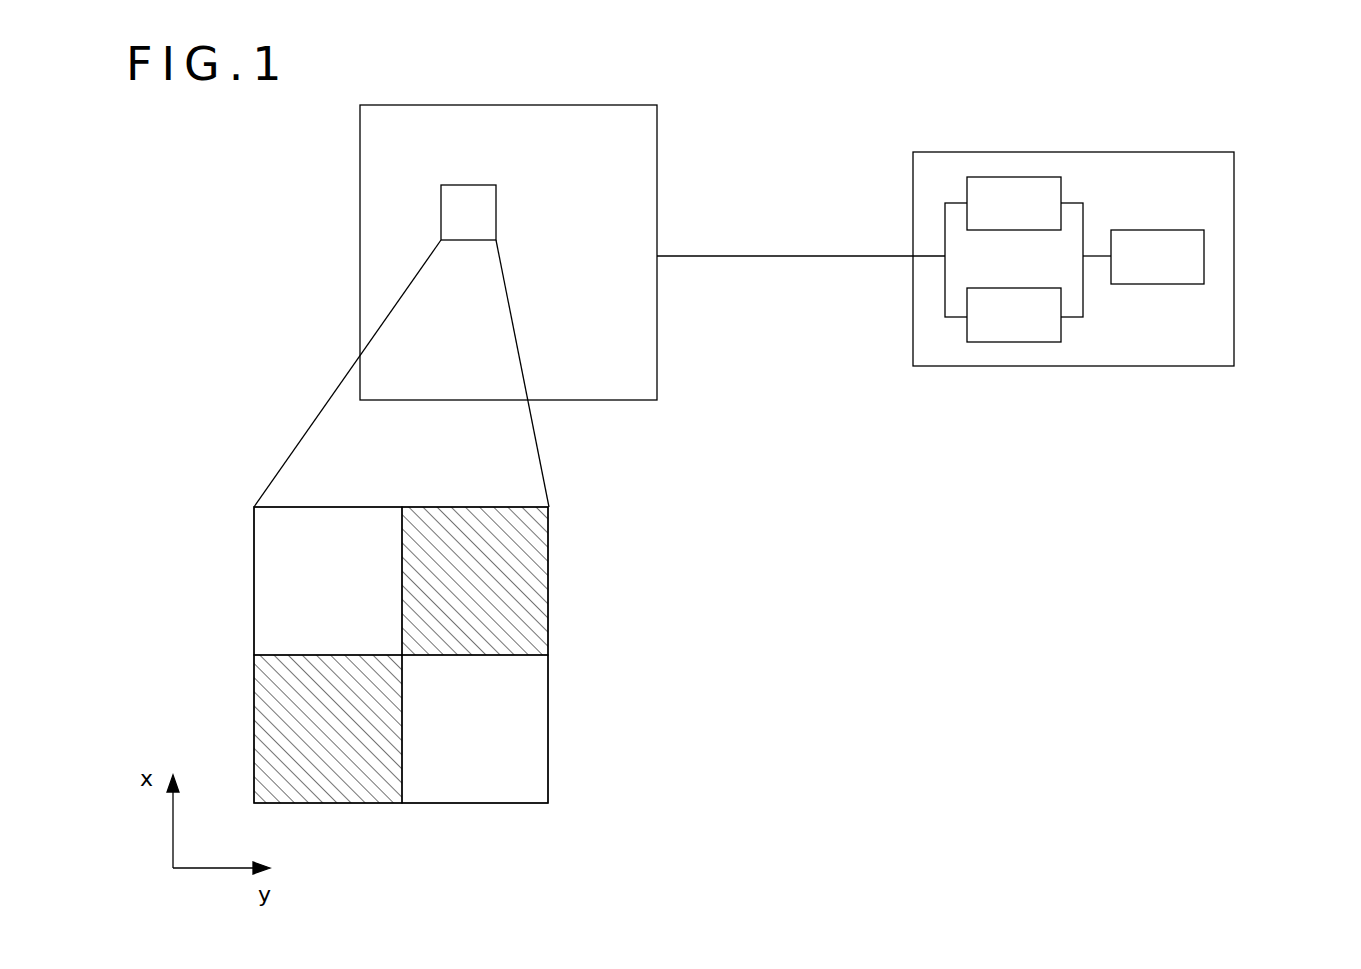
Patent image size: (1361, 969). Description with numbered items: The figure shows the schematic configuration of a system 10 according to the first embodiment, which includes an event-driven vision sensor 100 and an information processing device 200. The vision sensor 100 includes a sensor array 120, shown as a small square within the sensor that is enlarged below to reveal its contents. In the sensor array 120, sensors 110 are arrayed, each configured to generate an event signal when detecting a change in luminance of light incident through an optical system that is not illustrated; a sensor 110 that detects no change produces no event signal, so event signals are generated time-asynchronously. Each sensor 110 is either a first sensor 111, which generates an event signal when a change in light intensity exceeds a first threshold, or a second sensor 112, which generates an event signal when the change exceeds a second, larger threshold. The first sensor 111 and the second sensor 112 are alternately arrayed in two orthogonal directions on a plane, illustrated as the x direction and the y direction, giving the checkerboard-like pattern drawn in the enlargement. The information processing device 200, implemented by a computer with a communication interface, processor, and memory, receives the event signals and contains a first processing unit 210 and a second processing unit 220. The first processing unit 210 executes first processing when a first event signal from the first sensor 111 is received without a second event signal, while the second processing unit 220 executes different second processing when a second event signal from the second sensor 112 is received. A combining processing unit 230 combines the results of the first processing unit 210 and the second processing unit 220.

The system 10 is at (830, 135).
The event-driven vision sensor 100 is at (361, 197).
The sensor 110 is at (442, 655).
The first sensor 111 is at (353, 591).
The second sensor 112 is at (503, 591).
The sensor array 120 is at (636, 162).
The information processing device 200 is at (1126, 256).
The first processing unit 210 is at (1061, 188).
The second processing unit 220 is at (1061, 333).
The combining processing unit 230 is at (1204, 258).